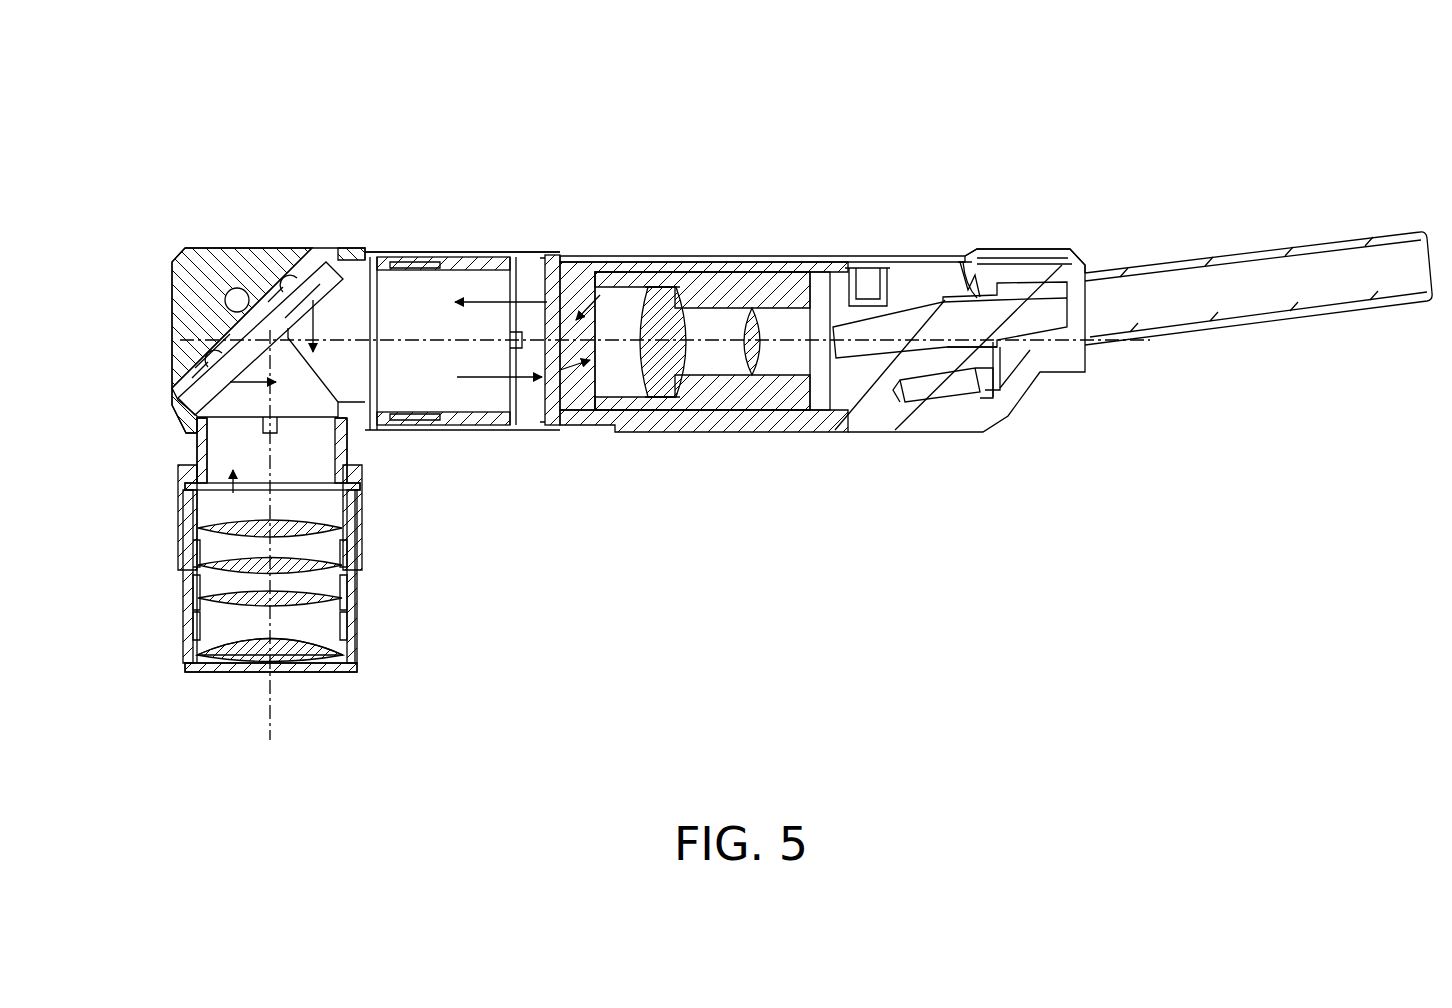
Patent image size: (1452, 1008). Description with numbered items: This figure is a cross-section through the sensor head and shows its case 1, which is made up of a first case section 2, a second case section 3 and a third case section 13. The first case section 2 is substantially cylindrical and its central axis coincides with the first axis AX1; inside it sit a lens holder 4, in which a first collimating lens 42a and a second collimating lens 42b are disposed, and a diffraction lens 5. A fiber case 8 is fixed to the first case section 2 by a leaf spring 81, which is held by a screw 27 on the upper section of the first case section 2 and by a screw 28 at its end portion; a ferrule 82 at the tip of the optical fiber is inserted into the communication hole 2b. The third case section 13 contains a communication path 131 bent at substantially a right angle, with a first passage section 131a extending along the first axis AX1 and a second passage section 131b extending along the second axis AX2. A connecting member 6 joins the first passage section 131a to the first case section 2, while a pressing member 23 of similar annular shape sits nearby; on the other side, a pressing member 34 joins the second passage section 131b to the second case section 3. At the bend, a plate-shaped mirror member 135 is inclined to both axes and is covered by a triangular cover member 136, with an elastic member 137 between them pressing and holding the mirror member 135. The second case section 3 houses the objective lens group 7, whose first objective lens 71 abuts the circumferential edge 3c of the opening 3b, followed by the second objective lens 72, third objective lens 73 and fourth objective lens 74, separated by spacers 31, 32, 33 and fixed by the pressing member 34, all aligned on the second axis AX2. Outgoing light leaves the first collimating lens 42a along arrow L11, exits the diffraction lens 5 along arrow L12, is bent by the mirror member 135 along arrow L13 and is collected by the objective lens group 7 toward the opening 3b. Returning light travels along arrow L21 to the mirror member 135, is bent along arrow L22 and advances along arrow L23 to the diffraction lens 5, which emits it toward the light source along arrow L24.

The case 1 is at (552, 495).
The first case section 2 is at (487, 435).
The communication hole 2b is at (983, 258).
The second case section 3 is at (362, 588).
The opening 3b is at (235, 667).
The circumferential edge 3c is at (270, 668).
The lens holder 4 is at (668, 402).
The diffraction lens 5 is at (547, 250).
The connecting member 6 is at (425, 248).
The objective lens group 7 is at (105, 457).
The fiber case 8 is at (1257, 250).
The third case section 13 is at (370, 440).
The pressing member 23 is at (520, 250).
The screw 27 is at (865, 255).
The screw 28 is at (1010, 415).
The spacer 31 is at (358, 640).
The spacer 32 is at (360, 595).
The spacer 33 is at (360, 555).
The pressing member 34 is at (360, 450).
The first collimating lens 42a is at (680, 253).
The second collimating lens 42b is at (745, 253).
The first objective lens 71 is at (185, 657).
The second objective lens 72 is at (185, 603).
The third objective lens 73 is at (185, 565).
The fourth objective lens 74 is at (185, 505).
The leaf spring 81 is at (940, 255).
The ferrule 82 is at (912, 255).
The communication path 131 is at (418, 108).
The first passage section 131a is at (395, 278).
The second passage section 131b is at (226, 292).
The mirror member 135 is at (200, 390).
The cover member 136 is at (176, 272).
The elastic member 137 is at (270, 248).
The first axis AX1 is at (728, 400).
The second axis AX2 is at (270, 700).
The arrow L11 is at (572, 250).
The arrow L12 is at (455, 250).
The arrow L13 is at (338, 248).
The arrow L21 is at (230, 495).
The arrow L22 is at (235, 248).
The arrow L23 is at (480, 378).
The arrow L24 is at (588, 430).